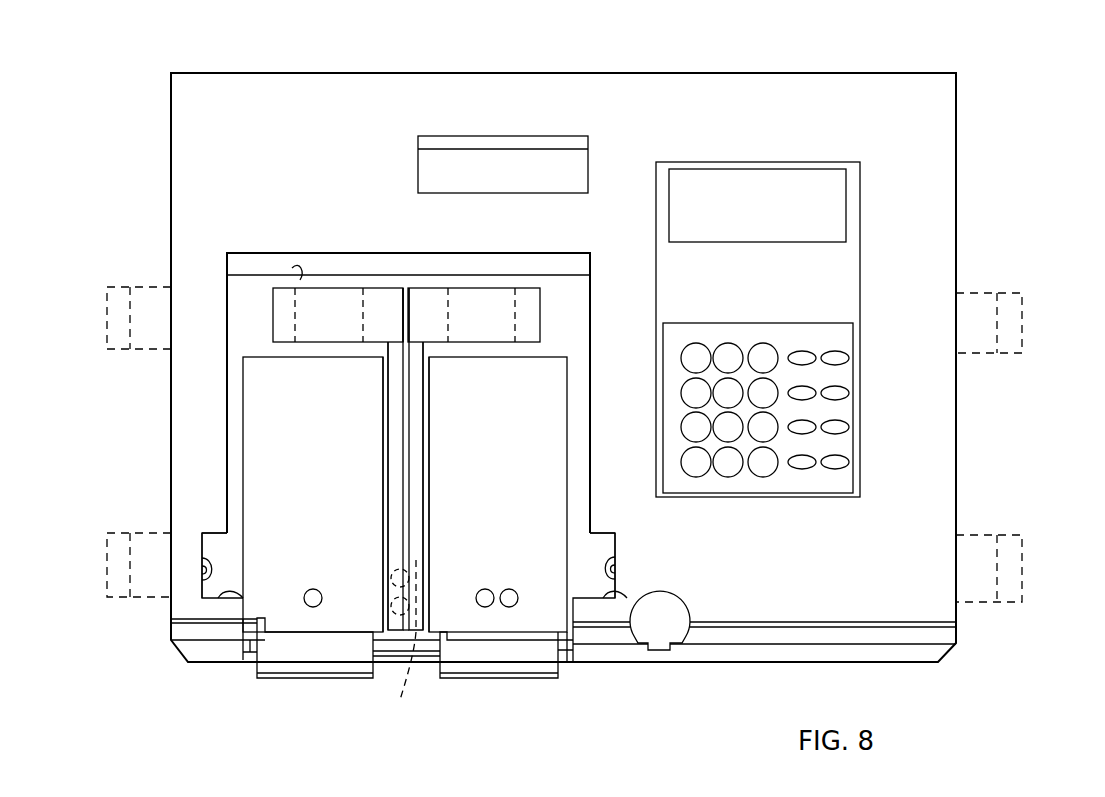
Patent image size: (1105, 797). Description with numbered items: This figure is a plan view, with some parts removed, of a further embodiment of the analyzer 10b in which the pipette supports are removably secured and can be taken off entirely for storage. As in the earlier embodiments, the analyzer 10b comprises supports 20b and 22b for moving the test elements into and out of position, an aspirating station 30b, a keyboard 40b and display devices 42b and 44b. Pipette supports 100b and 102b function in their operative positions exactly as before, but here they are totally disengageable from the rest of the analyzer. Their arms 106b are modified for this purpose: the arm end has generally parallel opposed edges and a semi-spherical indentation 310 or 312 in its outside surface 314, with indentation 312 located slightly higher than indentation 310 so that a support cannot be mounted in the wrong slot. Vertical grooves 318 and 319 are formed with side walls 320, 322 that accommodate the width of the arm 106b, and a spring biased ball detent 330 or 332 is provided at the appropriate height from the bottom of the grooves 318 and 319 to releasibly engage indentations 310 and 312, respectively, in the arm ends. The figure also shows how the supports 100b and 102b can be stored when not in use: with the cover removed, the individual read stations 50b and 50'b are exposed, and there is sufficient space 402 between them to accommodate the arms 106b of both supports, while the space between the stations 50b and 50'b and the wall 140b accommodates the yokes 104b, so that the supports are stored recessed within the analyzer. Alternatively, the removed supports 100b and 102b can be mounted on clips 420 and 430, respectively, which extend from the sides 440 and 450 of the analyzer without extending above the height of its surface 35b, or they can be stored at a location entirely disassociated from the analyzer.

The analyzer 10b is at (633, 72).
The support 20b is at (320, 662).
The support 22b is at (513, 662).
The aspirating station 30b is at (672, 627).
The surface 35b is at (832, 575).
The keyboard 40b is at (739, 345).
The display device 42b is at (741, 190).
The display device 44b is at (414, 147).
The read station 50b is at (300, 429).
The read station 50'b is at (498, 494).
The pipette support 100b is at (398, 438).
The pipette support 102b is at (414, 450).
The yoke 104b is at (283, 300).
The arm 106b is at (395, 518).
The wall 140b is at (293, 288).
The semi-spherical indentation 310 is at (393, 644).
The semi-spherical indentation 312 is at (420, 566).
The outside surface 314 is at (403, 320).
The vertical groove 318 is at (201, 531).
The vertical groove 319 is at (606, 532).
The side wall 320 is at (218, 539).
The side wall 322 is at (219, 598).
The spring biased ball detent 330 is at (202, 594).
The spring biased ball detent 332 is at (615, 548).
The space 402 is at (421, 670).
The clip 420 is at (112, 312).
The clip 430 is at (1022, 333).
The side 440 is at (171, 415).
The side 450 is at (956, 206).